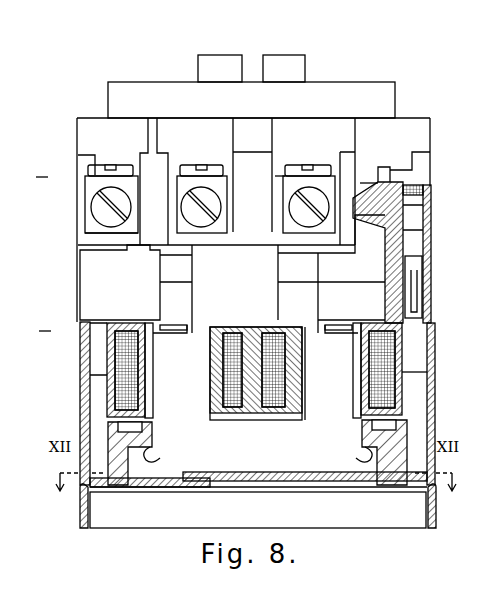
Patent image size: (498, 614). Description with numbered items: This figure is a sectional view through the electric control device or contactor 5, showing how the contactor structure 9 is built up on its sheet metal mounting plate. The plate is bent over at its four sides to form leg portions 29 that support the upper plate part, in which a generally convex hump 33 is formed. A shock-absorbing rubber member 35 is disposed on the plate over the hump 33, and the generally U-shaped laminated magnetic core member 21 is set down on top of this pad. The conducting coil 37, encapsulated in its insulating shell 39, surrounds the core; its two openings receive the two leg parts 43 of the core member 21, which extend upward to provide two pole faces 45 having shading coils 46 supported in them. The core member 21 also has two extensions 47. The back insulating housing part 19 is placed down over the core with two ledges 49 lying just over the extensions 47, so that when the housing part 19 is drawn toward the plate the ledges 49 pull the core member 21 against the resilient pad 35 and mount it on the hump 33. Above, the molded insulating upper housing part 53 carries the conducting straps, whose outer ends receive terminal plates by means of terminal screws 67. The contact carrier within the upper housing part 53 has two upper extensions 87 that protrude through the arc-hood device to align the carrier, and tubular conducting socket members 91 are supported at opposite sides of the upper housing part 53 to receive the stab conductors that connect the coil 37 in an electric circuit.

The electric control device or contactor 5 is at (42, 168).
The contactor structure 9 is at (45, 322).
The back insulating housing part 19 is at (433, 428).
The magnetic core member 21 is at (241, 456).
The leg portions 29 is at (84, 508).
The hump 33 is at (283, 482).
The shock-absorbing resilient elastomeric or rubber member 35 is at (208, 487).
The conducting coil 37 is at (107, 343).
The insulating shell 39 is at (112, 396).
The leg parts 43 is at (157, 350).
The pole faces 45 is at (178, 323).
The shading coils 46 is at (172, 334).
The extensions 47 is at (131, 466).
The ledges 49 is at (158, 461).
The upper housing part 53 is at (431, 212).
The terminal screw 67 is at (106, 165).
The upper extensions 87 is at (257, 62).
The tubular conducting socket members 91 is at (423, 302).